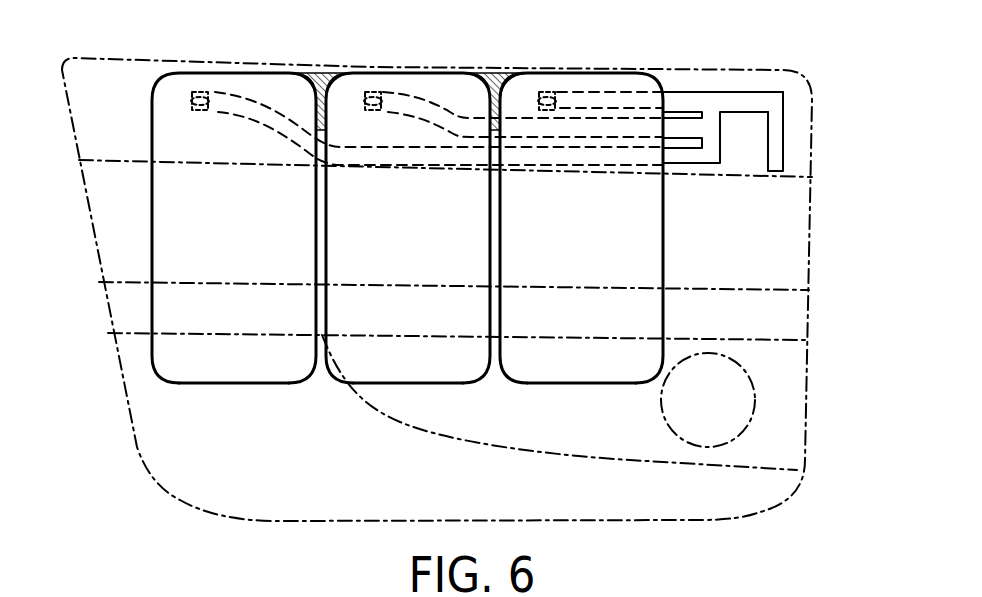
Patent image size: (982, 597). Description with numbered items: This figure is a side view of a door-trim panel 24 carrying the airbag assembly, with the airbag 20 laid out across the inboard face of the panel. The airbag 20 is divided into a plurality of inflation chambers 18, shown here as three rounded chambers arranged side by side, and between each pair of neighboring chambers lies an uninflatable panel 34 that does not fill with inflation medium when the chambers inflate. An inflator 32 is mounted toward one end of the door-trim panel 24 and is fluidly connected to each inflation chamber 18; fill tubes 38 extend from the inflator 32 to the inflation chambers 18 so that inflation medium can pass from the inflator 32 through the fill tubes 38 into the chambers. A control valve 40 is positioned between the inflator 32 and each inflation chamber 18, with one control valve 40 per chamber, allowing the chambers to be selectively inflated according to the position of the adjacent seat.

The inflation chamber 18 is at (238, 362).
The airbag 20 is at (267, 385).
The door-trim panel 24 is at (777, 250).
The inflator 32 is at (775, 128).
The uninflatable panel 34 is at (313, 72).
The fill tube 38 is at (715, 100).
The control valve 40 is at (205, 100).